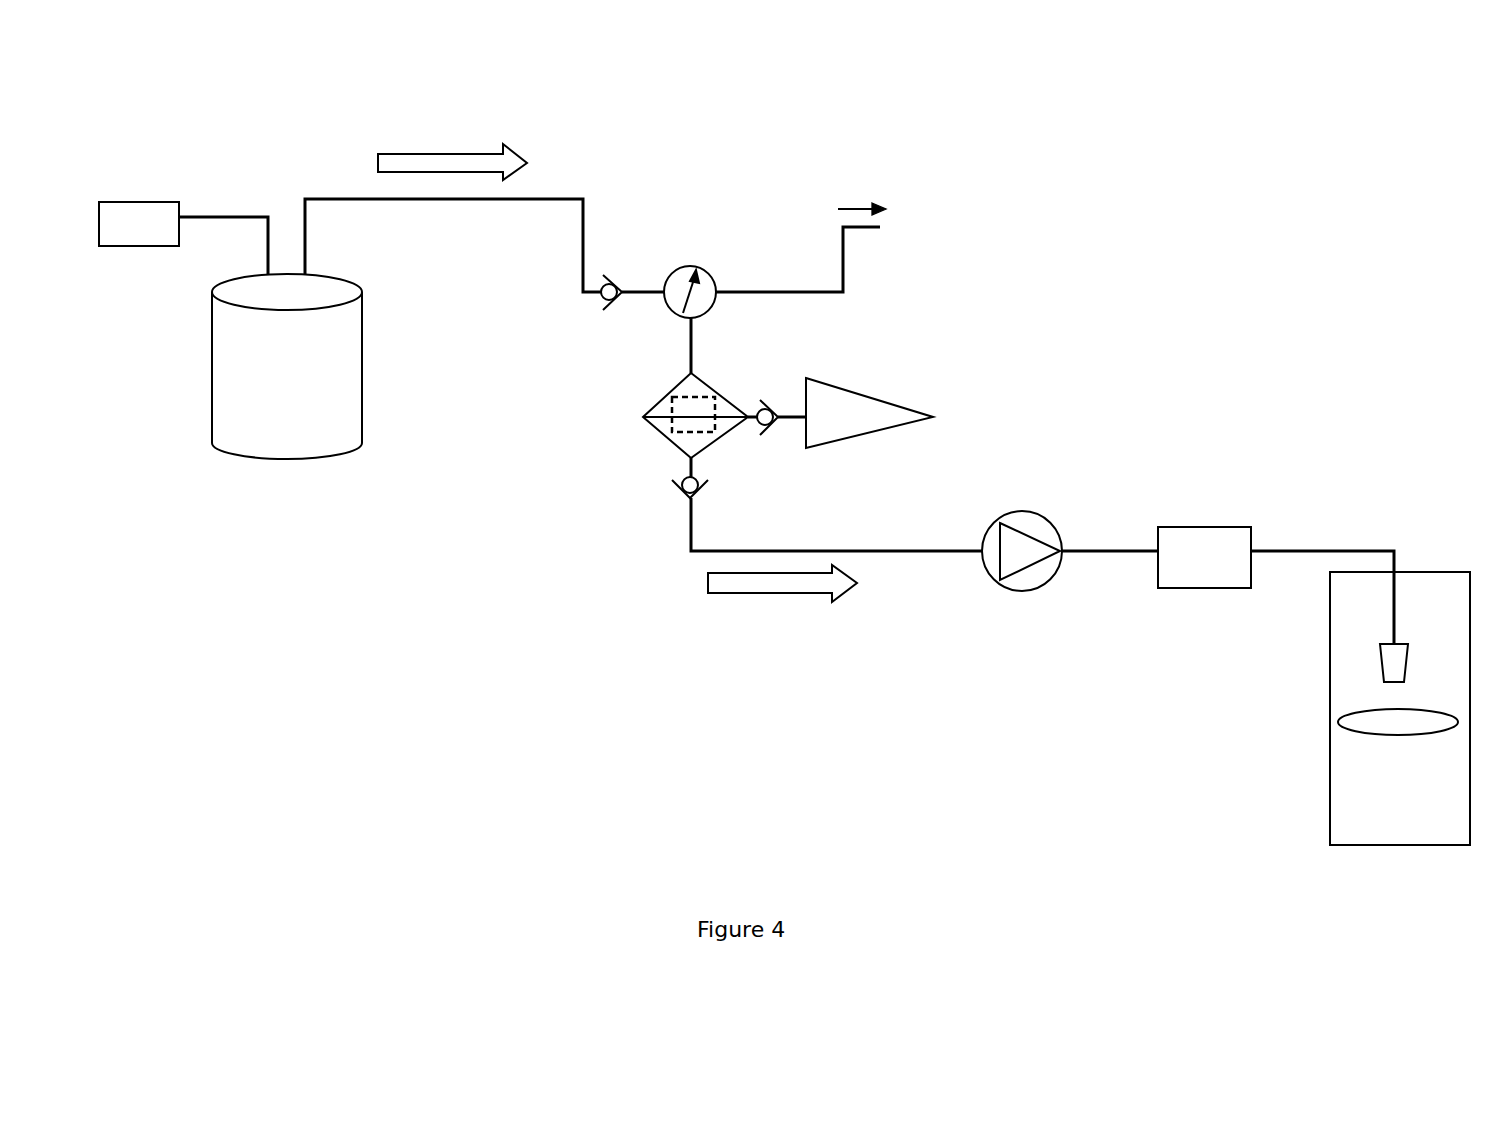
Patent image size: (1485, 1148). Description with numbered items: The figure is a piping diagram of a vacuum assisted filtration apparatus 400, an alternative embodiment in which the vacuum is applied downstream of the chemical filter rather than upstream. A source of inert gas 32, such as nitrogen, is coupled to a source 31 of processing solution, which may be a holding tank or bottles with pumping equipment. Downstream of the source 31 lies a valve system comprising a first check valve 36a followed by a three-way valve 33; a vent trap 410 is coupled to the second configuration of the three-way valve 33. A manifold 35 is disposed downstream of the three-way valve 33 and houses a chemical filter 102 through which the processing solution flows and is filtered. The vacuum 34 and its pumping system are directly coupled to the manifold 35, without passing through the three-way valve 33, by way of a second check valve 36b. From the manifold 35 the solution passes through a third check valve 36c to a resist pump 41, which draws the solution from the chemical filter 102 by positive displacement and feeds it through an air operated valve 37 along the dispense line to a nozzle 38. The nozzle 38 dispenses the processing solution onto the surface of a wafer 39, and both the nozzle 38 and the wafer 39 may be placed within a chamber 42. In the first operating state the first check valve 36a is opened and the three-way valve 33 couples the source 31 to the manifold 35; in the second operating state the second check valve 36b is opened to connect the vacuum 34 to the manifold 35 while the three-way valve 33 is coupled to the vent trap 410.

The vacuum assisted filtration apparatus 400 is at (1247, 108).
The vent trap 410 is at (860, 140).
The source 31 is at (264, 468).
The source of inert gas 32 is at (150, 200).
The three-way valve 33 is at (680, 268).
The vacuum 34 is at (933, 417).
The manifold 35 is at (643, 417).
The chemical filter 102 is at (682, 432).
The first check valve 36a is at (593, 302).
The second check valve 36b is at (760, 402).
The third check valve 36c is at (707, 497).
The air operated valve 37 is at (1213, 520).
The nozzle 38 is at (1380, 670).
The wafer 39 is at (1395, 740).
The resist pump 41 is at (1035, 515).
The chamber 42 is at (1330, 770).